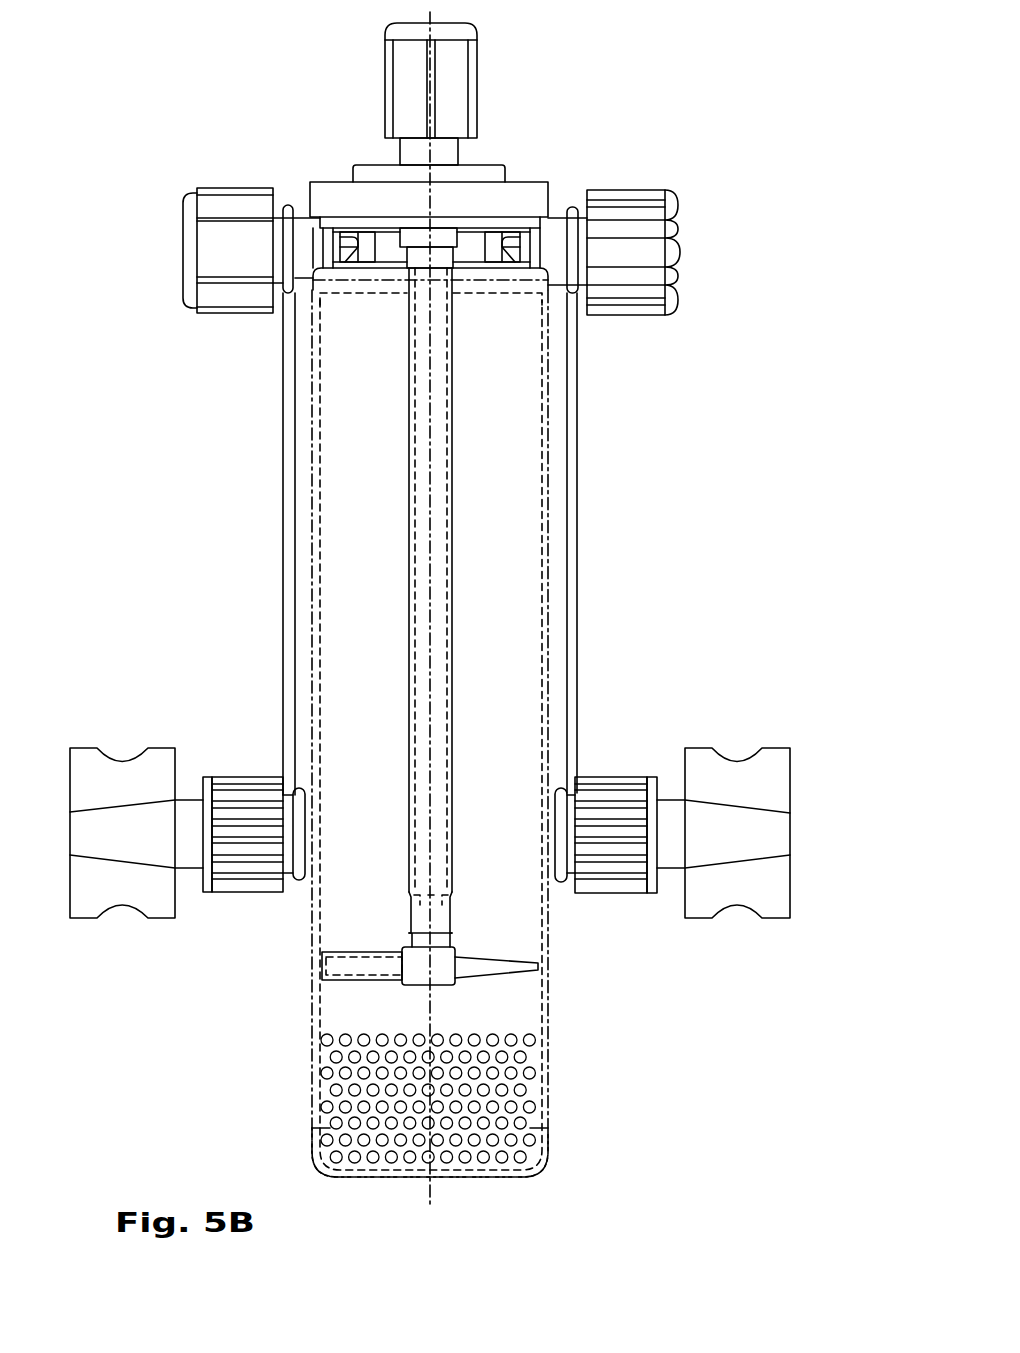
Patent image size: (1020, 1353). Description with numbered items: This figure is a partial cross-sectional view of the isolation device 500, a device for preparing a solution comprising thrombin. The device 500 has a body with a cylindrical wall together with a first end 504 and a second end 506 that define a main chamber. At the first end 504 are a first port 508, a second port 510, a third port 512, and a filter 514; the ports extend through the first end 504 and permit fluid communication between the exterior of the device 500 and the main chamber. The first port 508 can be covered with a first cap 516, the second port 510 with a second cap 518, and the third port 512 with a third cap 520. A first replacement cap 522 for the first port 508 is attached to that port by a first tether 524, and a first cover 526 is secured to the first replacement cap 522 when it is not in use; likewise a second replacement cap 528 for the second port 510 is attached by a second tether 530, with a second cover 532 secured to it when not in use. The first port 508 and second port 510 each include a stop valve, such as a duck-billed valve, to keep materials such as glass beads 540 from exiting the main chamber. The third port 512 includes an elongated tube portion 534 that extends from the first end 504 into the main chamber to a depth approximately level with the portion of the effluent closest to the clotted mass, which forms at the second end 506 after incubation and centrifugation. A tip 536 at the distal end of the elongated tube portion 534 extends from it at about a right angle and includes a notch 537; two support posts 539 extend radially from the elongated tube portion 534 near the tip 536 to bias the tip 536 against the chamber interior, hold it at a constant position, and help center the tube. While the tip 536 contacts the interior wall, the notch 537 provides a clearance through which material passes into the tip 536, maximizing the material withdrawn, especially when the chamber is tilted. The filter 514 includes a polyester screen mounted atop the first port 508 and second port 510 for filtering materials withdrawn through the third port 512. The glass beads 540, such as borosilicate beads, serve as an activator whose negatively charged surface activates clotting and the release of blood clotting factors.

The isolation device 500 is at (194, 463).
The first end 504 is at (500, 274).
The second end 506 is at (477, 1177).
The first port 508 is at (308, 233).
The second port 510 is at (557, 240).
The third port 512 is at (452, 152).
The filter 514 is at (528, 200).
The first cap 516 is at (228, 258).
The second cap 518 is at (647, 255).
The third cap 520 is at (452, 80).
The first replacement cap 522 is at (256, 775).
The first tether 524 is at (283, 482).
The first cover 526 is at (123, 777).
The second replacement cap 528 is at (612, 775).
The second tether 530 is at (580, 432).
The second cover 532 is at (733, 875).
The elongated tube portion 534 is at (452, 572).
The tip 536 is at (350, 952).
The notch 537 is at (322, 968).
The support posts 539 is at (503, 968).
The glass beads 540 is at (325, 1040).